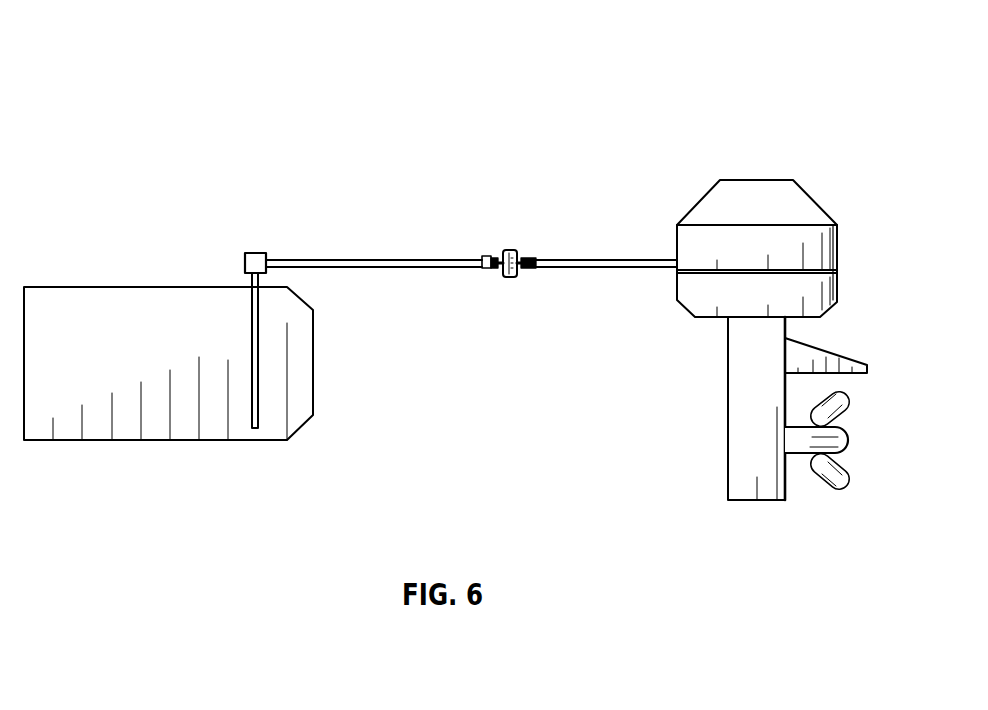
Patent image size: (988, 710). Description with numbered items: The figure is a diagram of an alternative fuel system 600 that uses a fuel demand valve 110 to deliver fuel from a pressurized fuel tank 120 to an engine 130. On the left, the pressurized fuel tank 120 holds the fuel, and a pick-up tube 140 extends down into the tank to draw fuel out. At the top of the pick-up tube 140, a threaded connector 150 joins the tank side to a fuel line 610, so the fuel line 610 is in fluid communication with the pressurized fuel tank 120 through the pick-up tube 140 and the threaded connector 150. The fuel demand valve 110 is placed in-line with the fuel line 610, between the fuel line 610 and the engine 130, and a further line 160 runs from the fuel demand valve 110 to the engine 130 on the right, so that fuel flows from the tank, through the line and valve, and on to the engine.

The fuel system 600 is at (820, 34).
The pressurized fuel tank 120 is at (88, 287).
The pick-up tube 140 is at (250, 410).
The threaded connector 150 is at (257, 252).
The fuel line 610 is at (403, 268).
The fuel demand valve 110 is at (485, 255).
The motor cable 160 is at (592, 266).
The engine 130 is at (728, 180).